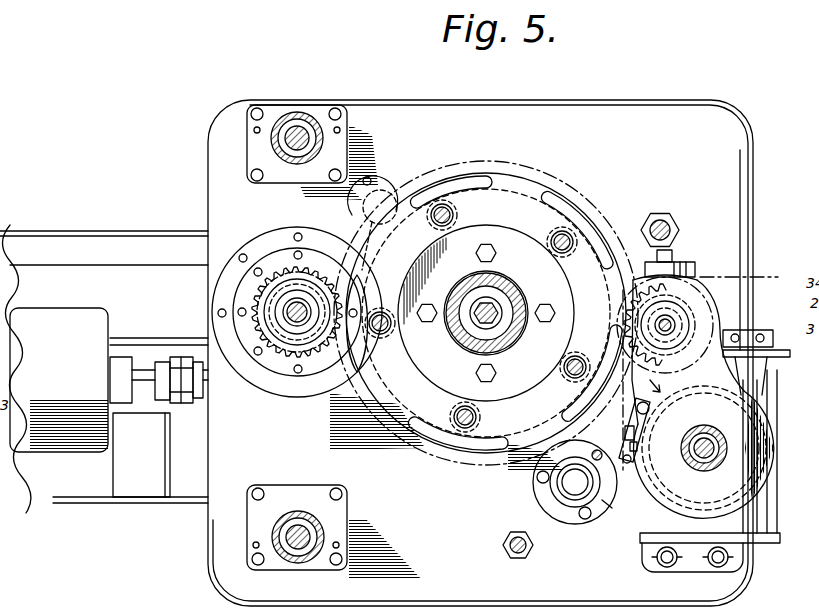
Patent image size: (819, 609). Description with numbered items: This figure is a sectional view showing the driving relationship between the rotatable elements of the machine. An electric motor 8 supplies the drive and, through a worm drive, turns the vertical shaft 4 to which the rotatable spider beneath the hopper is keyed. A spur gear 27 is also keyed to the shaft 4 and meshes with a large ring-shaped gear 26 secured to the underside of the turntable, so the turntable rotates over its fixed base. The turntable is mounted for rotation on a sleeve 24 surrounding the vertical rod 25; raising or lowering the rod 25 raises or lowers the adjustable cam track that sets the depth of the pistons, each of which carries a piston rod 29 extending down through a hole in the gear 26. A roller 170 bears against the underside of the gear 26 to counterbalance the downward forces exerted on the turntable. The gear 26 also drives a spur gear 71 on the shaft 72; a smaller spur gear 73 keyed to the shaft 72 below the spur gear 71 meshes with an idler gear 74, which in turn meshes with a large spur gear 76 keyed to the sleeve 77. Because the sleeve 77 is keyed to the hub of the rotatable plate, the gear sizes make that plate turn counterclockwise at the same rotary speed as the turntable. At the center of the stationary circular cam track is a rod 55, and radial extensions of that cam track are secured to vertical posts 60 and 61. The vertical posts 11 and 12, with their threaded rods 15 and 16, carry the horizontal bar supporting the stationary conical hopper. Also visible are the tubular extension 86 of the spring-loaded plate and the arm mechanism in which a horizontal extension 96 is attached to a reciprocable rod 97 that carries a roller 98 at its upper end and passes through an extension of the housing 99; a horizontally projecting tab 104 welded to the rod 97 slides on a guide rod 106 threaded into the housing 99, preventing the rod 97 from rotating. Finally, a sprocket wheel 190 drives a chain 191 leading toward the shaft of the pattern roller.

The vertical shaft 4 is at (302, 300).
The electric motor 8 is at (70, 322).
The vertical post 11 is at (296, 511).
The vertical post 12 is at (302, 128).
The threaded rod 15 is at (297, 560).
The threaded rod 16 is at (289, 125).
The sleeve 24 is at (505, 296).
The vertical rod 25 is at (502, 322).
The ring-shaped gear 26 is at (578, 204).
The spur gear 27 is at (292, 340).
The piston rod 29 is at (455, 213).
The rod 55 is at (704, 460).
The vertical post 60 is at (506, 551).
The vertical post 61 is at (661, 216).
The spur gear 71 is at (686, 284).
The shaft 72 is at (672, 323).
The smaller spur gear 73 is at (690, 370).
The idler gear 74 is at (652, 384).
The large spur gear 76 is at (776, 452).
The sleeve 77 is at (708, 438).
The tubular extension 86 is at (562, 490).
The horizontal extension 96 is at (632, 459).
The reciprocable rod 97 is at (638, 447).
The roller 98 is at (625, 432).
The housing 99 is at (606, 504).
The horizontally projecting tab 104 is at (641, 426).
The guide rod 106 is at (650, 410).
The roller 170 is at (390, 190).
The sprocket wheel 190 is at (680, 262).
The chain 191 is at (761, 277).